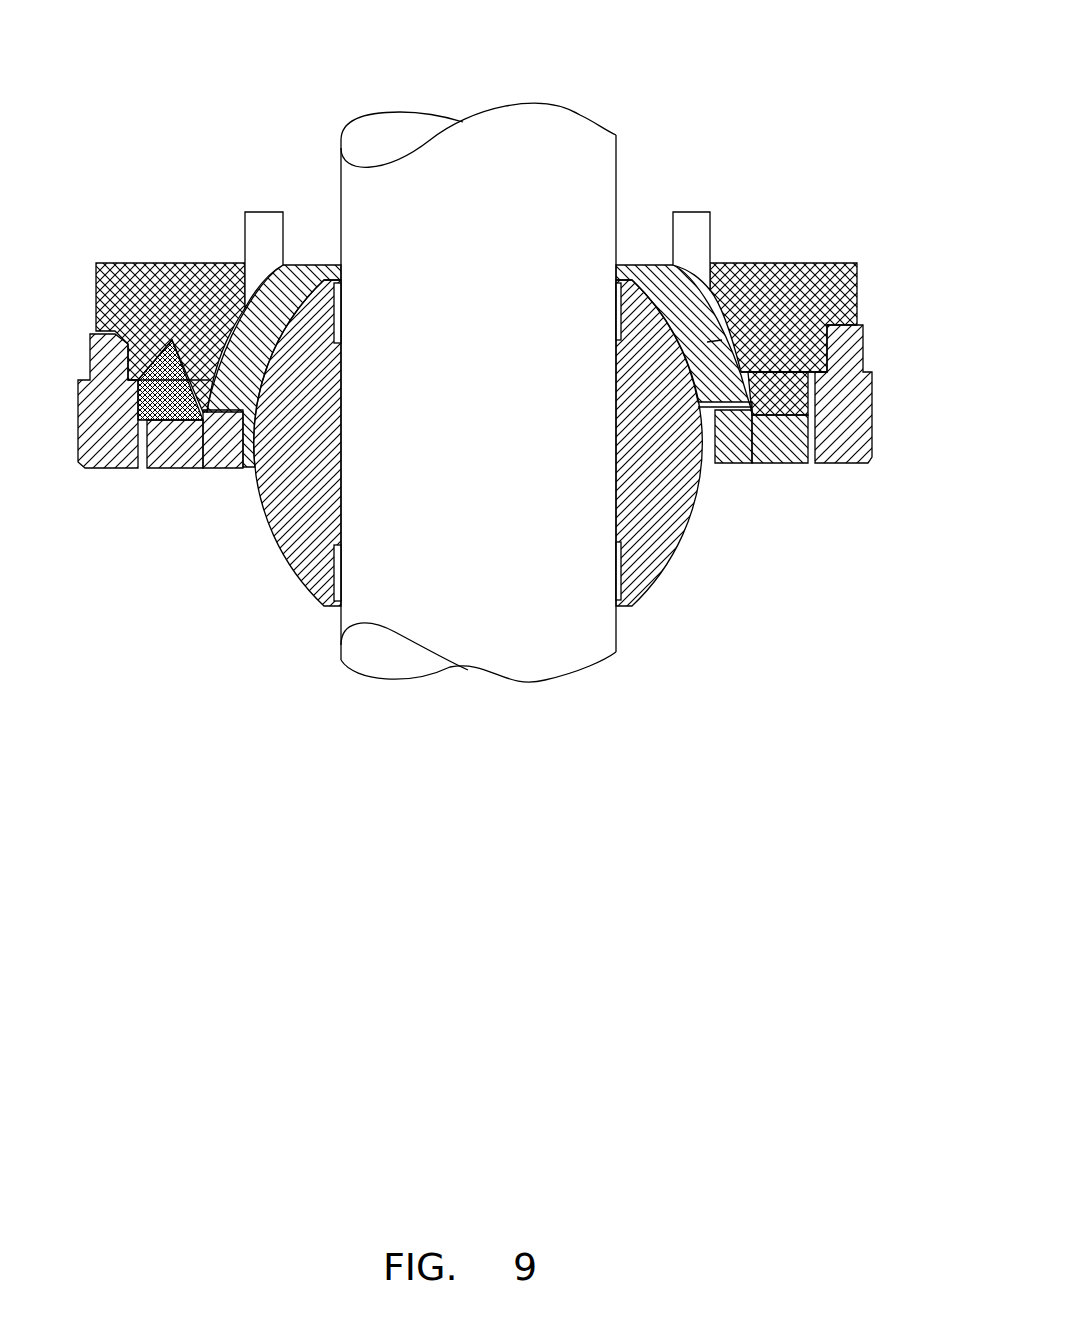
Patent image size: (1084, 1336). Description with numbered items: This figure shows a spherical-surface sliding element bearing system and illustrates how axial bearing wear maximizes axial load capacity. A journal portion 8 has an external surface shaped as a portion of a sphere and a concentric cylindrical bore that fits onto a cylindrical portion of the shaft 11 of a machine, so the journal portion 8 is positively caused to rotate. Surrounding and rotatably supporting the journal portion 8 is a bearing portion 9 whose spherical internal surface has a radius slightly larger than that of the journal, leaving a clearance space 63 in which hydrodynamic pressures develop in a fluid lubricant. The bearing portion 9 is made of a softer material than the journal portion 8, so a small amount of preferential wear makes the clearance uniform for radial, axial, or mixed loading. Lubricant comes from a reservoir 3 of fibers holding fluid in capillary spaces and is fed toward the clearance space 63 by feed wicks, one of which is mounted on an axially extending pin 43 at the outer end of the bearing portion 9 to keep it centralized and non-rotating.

The reservoir 3 is at (818, 267).
The journal portion 8 is at (657, 520).
The bearing portion 9 is at (762, 325).
The shaft 11 is at (538, 547).
The pin 43 is at (697, 222).
The clearance space 63 is at (707, 452).